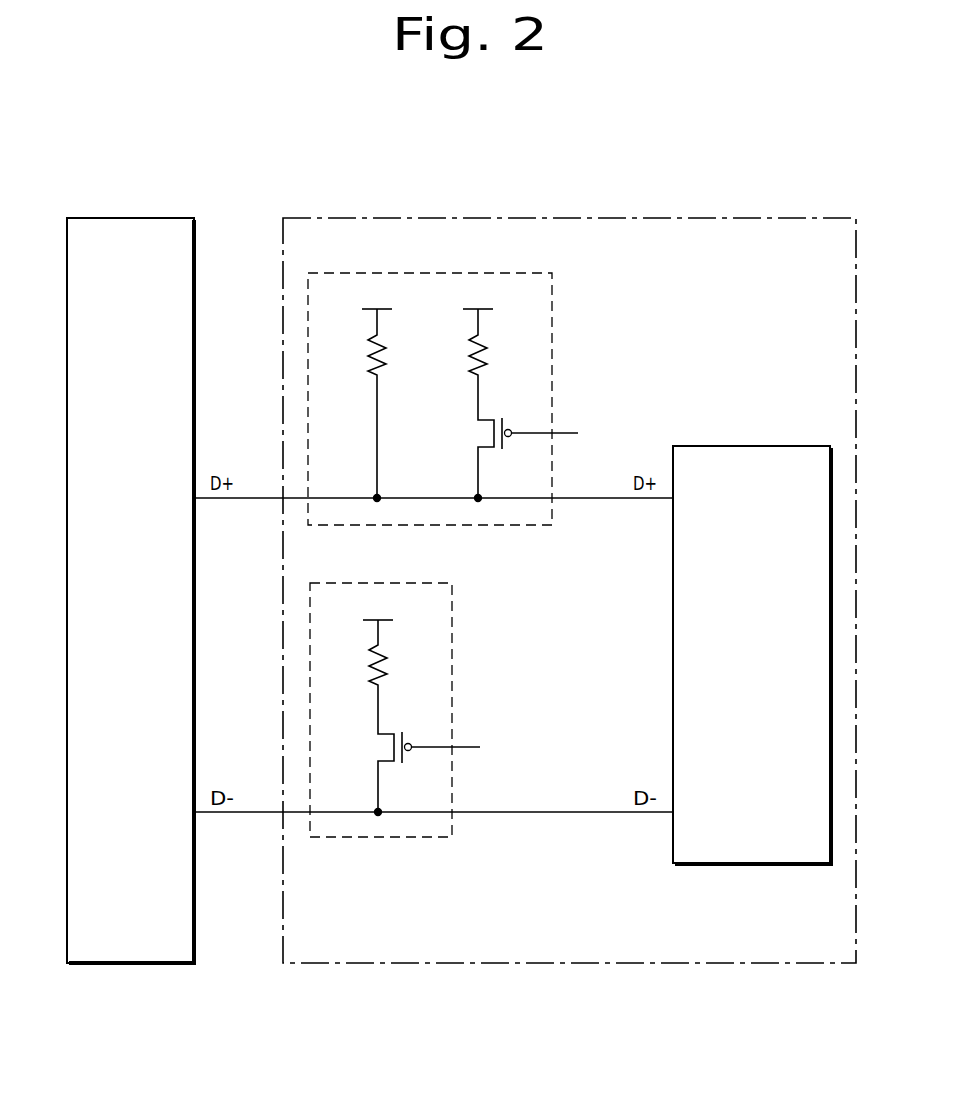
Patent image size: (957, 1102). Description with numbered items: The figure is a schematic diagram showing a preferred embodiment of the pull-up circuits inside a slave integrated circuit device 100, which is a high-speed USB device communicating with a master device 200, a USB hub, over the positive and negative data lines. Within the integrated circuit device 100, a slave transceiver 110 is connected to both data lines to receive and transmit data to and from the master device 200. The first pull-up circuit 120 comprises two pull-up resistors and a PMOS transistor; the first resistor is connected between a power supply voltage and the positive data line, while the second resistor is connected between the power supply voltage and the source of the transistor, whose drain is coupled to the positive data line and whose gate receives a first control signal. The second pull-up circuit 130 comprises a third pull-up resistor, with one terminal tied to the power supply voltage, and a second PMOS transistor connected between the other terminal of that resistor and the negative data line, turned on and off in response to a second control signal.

The master device 200 is at (152, 217).
The integrated circuit device 100 is at (788, 217).
The slave transceiver 110 is at (792, 445).
The first pull-up circuit 120 is at (553, 322).
The second pull-up circuit 130 is at (453, 632).